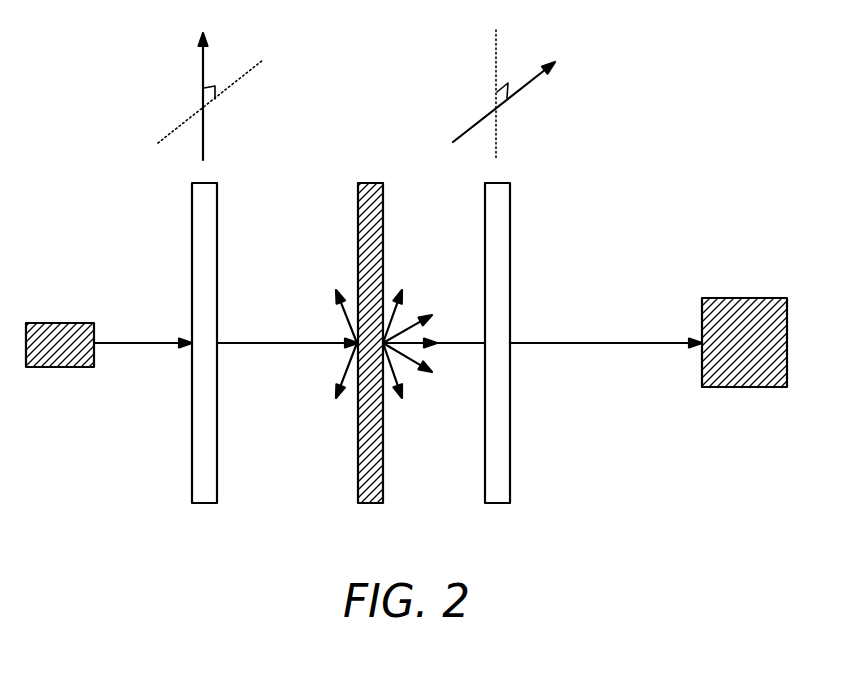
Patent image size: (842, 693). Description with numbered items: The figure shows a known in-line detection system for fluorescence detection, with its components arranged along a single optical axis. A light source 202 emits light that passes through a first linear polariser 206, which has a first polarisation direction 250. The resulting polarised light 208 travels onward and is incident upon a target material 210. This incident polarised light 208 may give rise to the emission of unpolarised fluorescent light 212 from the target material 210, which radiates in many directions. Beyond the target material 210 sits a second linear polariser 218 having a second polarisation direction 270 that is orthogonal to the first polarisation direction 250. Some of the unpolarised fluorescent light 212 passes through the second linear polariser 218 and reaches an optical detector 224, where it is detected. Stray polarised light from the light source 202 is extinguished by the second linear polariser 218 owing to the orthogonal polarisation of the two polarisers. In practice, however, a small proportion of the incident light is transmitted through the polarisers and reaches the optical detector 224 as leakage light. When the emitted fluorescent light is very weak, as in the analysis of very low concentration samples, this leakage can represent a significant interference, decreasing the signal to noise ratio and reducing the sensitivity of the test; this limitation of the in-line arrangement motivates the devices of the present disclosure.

The light source 202 is at (63, 367).
The first linear polariser 206 is at (203, 503).
The polarised light 208 is at (280, 343).
The target material 210 is at (370, 503).
The unpolarised fluorescent light 212 is at (413, 382).
The second linear polariser 218 is at (497, 503).
The optical detector 224 is at (755, 387).
The first polarisation direction 250 is at (188, 100).
The second polarisation direction 270 is at (480, 99).